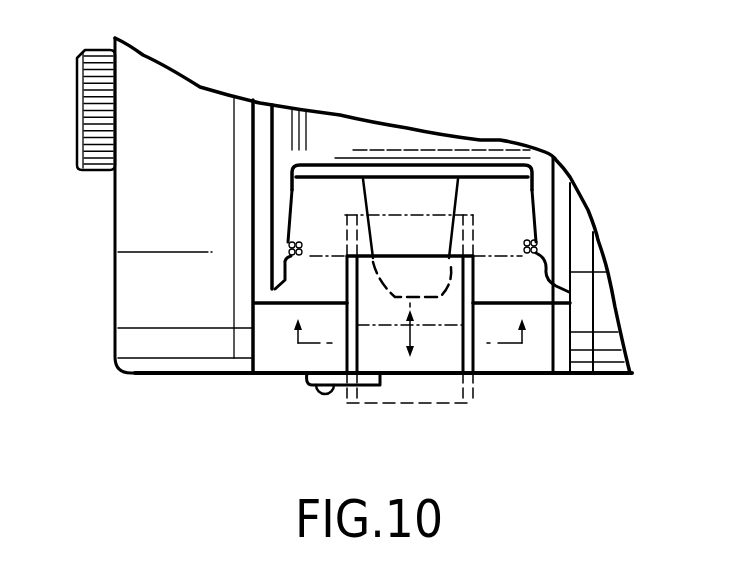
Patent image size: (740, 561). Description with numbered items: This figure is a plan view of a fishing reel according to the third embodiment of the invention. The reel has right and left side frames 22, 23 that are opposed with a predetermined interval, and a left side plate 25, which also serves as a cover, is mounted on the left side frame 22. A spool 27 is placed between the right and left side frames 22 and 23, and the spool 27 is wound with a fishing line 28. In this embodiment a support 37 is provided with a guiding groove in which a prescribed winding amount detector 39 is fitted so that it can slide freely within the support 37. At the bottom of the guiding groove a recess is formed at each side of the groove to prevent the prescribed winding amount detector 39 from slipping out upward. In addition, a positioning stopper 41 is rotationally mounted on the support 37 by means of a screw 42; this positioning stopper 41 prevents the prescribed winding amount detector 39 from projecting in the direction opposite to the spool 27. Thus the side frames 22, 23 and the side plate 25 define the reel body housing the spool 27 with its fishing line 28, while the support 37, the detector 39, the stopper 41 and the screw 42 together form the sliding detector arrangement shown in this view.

The left side frame 22 is at (240, 342).
The right side frame 23 is at (585, 360).
The left side plate 25 is at (128, 277).
The spool 27 is at (396, 133).
The fishing line 28 is at (302, 240).
The support 37 is at (275, 359).
The prescribed winding amount detector 39 is at (423, 382).
The positioning stopper 41 is at (341, 388).
The screw 42 is at (320, 386).